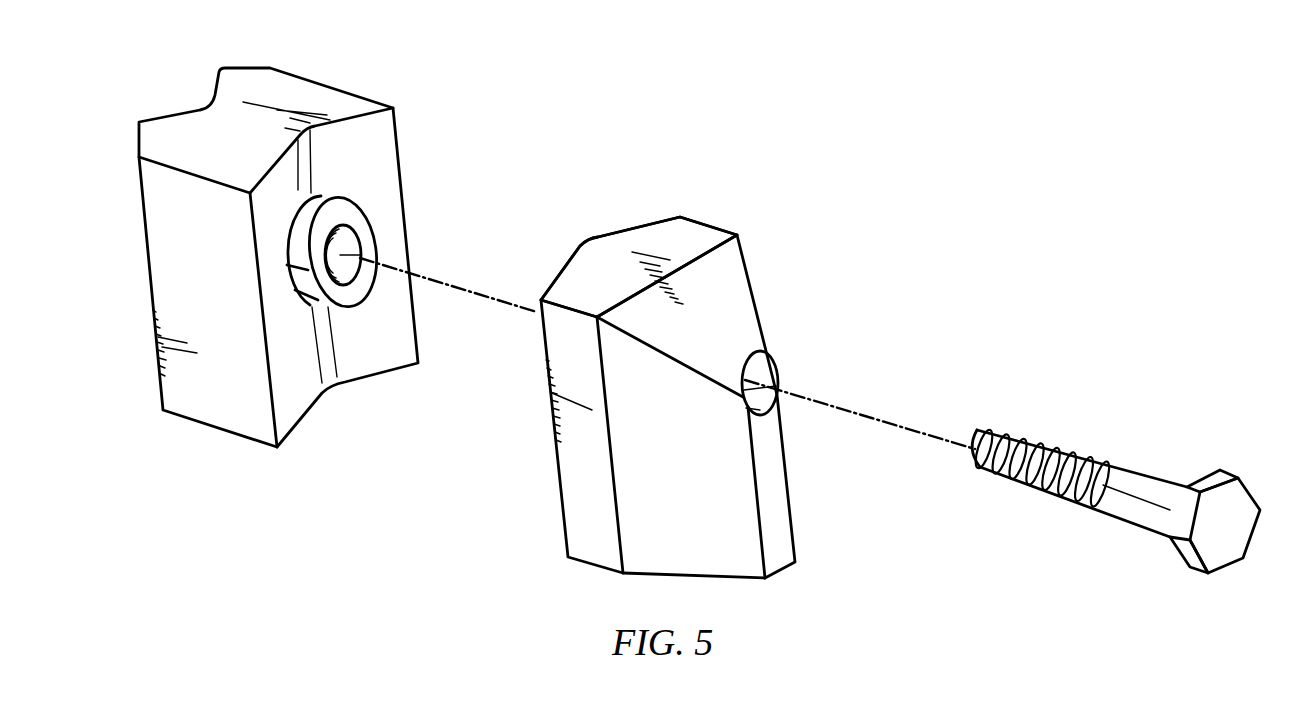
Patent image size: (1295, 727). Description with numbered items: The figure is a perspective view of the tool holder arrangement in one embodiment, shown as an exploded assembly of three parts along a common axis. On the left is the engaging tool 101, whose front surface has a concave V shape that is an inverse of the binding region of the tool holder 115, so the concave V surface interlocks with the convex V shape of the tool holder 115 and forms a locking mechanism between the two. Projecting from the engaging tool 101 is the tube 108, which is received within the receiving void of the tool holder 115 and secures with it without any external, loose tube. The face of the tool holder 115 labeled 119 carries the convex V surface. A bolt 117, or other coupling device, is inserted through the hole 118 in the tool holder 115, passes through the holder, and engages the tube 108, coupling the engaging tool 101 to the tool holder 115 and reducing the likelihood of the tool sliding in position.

The engaging tool 101 is at (160, 53).
The tube 108 is at (378, 247).
The tool holder 115 is at (784, 204).
The inclined wedge face 119 is at (630, 227).
The hole 118 is at (780, 378).
The bolt 117 is at (1063, 503).